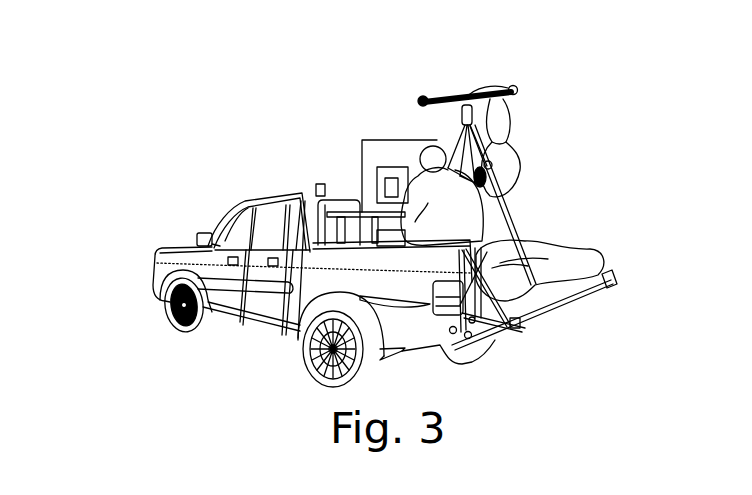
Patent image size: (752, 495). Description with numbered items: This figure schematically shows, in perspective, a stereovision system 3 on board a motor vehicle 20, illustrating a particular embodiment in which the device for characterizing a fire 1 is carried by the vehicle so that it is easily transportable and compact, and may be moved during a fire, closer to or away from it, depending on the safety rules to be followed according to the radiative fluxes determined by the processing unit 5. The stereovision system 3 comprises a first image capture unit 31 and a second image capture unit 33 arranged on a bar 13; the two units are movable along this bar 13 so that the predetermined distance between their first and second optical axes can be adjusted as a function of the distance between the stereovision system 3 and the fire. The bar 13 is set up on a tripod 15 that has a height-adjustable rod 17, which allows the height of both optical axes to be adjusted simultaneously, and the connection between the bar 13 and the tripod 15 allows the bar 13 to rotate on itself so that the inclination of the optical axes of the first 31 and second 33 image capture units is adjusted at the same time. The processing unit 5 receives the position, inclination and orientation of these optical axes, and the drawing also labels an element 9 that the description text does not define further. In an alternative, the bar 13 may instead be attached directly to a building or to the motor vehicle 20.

The device for characterizing a fire 1 is at (126, 118).
The stereovision system 3 is at (516, 216).
The processing unit 5 is at (361, 153).
The control panel 9 is at (362, 172).
The bar 13 is at (490, 89).
The tripod 15 is at (507, 167).
The height-adjustable rod 17 is at (505, 110).
The motor vehicle 20 is at (226, 306).
The first image capture unit 31 is at (520, 88).
The second image capture unit 33 is at (422, 97).